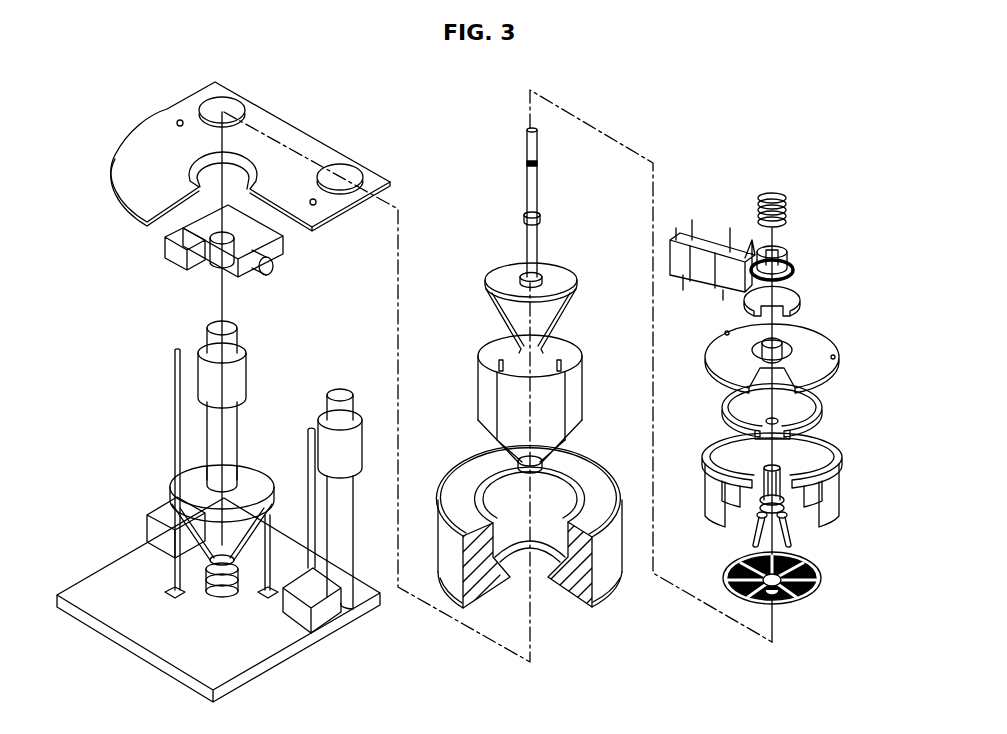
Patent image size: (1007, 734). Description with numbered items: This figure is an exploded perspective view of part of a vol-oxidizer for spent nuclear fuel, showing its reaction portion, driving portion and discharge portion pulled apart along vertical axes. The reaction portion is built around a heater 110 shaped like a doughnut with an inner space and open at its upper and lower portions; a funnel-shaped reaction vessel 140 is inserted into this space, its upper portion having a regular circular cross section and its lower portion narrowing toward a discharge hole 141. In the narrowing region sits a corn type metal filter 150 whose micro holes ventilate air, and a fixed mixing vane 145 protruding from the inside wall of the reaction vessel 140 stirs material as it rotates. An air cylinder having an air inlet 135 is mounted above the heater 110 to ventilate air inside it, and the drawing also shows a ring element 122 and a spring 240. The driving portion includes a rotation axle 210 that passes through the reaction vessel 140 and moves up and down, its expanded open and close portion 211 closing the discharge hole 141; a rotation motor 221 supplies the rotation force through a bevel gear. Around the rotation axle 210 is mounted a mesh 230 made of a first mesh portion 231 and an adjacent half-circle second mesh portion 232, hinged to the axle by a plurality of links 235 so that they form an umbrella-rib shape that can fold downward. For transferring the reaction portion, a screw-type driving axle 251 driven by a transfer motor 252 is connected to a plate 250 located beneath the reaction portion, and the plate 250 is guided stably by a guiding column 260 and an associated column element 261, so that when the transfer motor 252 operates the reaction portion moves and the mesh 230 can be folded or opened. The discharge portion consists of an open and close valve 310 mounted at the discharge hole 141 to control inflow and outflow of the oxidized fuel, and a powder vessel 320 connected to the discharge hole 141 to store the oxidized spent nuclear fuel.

The heater 110 is at (600, 585).
The sealing ring 122 is at (794, 268).
The air inlet 135 is at (781, 252).
The reaction vessel 140 is at (579, 390).
The discharge hole 141 is at (544, 458).
The fixed mixing vane 145 is at (561, 366).
The corn type metal filter 150 is at (553, 266).
The rotation axle 210 is at (527, 155).
The expanded open and close portion 211 is at (518, 266).
The rotation motor 221 is at (718, 240).
The mesh 230 is at (790, 604).
The first mesh portion 231 is at (804, 556).
The second mesh portion 232 is at (821, 591).
The links 235 is at (798, 513).
The spring 240 is at (786, 199).
The plate 250 is at (307, 137).
The driving axle 251 is at (311, 457).
The transfer motor 252 is at (327, 616).
The guiding column 260 is at (343, 391).
The cylinder 261 is at (362, 440).
The open and close valve 310 is at (190, 263).
The powder vessel 320 is at (178, 487).